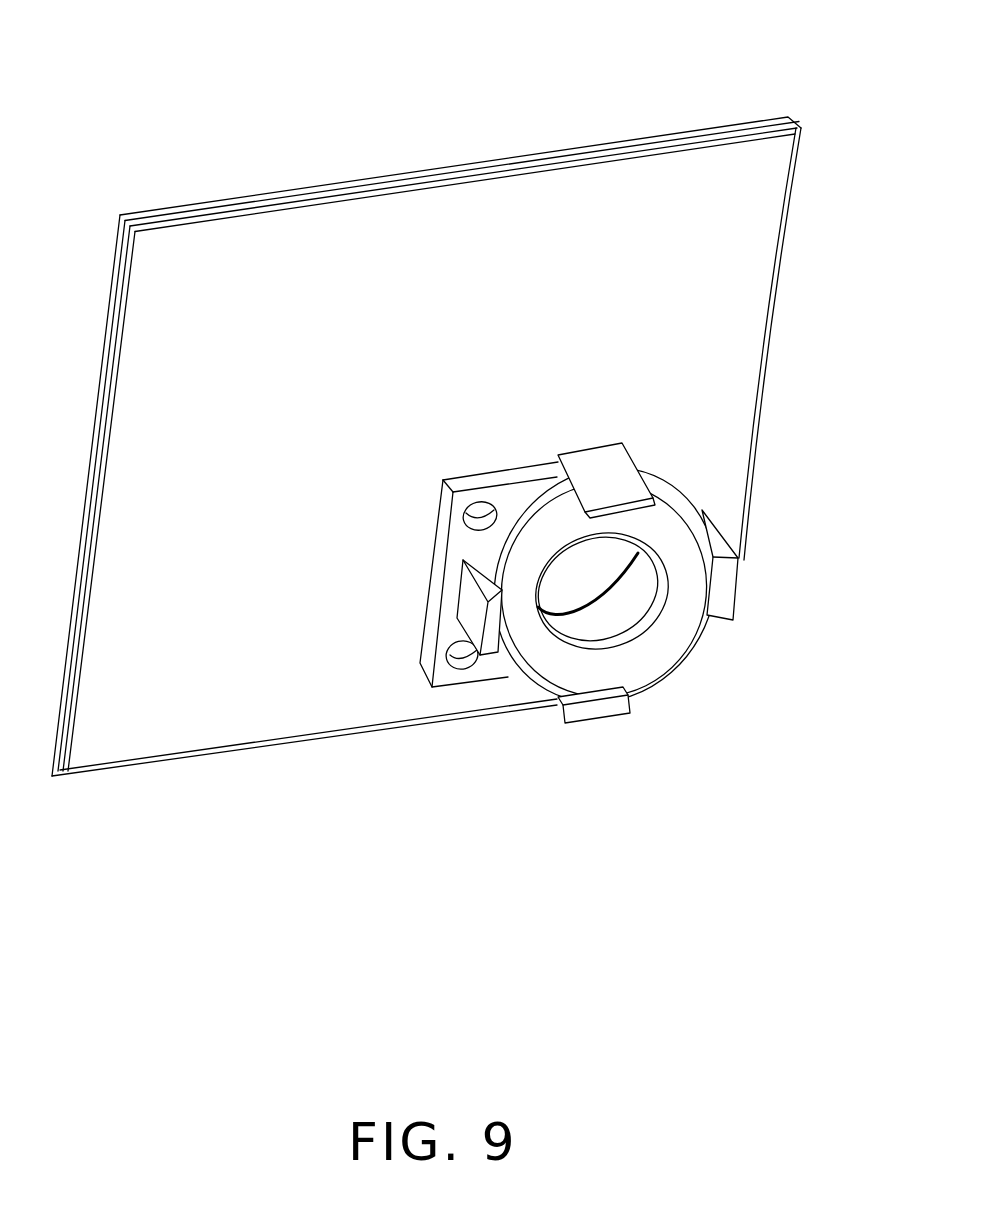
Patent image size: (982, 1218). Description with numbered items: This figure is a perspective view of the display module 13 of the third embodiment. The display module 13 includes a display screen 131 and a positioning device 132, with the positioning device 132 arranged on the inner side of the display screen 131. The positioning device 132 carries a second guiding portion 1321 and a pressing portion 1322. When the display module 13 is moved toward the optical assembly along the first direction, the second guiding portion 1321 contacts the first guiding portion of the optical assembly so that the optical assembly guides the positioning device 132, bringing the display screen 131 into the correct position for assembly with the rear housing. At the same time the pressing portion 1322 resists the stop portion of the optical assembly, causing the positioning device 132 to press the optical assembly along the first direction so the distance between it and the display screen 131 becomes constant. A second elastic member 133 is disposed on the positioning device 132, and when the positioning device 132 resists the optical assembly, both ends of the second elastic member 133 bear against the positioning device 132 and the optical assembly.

The display module 13 is at (757, 82).
The display screen 131 is at (745, 330).
The positioning device 132 is at (660, 483).
The second guiding portion 1321 is at (592, 703).
The pressing portion 1322 is at (522, 675).
The second elastic member 133 is at (655, 627).